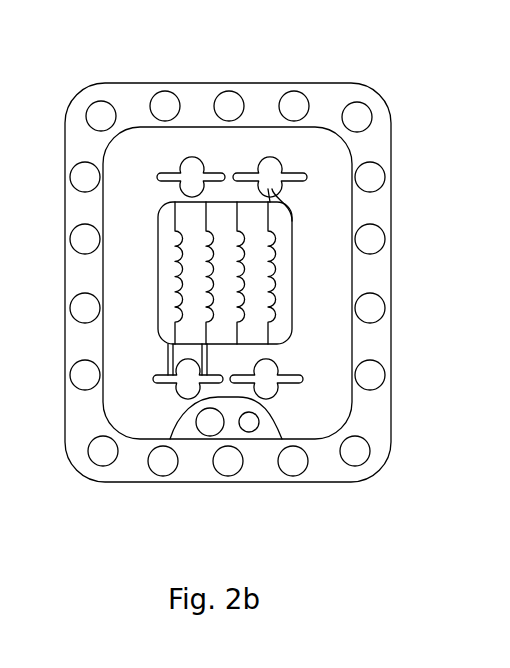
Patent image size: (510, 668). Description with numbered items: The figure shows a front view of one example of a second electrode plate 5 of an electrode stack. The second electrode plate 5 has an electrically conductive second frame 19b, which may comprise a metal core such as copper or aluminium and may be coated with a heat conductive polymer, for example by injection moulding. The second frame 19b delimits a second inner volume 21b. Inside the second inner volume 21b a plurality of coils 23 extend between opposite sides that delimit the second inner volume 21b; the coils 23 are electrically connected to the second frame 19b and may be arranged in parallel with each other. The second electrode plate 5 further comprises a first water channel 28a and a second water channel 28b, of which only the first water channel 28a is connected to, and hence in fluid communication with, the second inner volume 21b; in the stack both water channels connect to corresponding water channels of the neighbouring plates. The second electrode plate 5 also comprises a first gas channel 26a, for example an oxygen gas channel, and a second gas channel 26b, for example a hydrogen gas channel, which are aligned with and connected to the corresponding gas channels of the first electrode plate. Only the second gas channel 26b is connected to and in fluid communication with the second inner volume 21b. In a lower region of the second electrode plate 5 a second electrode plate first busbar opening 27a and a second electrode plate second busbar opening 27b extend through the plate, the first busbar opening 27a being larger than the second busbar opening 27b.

The second electrode plate 5 is at (355, 43).
The second frame 19b is at (188, 107).
The second inner volume 21b is at (167, 272).
The coils 23 is at (273, 272).
The first gas channel 26a is at (158, 176).
The second gas channel 26b is at (306, 178).
The second electrode plate first busbar opening 27a is at (200, 437).
The second electrode plate second busbar opening 27b is at (252, 431).
The first water channel 28a is at (153, 380).
The second water channel 28b is at (303, 380).